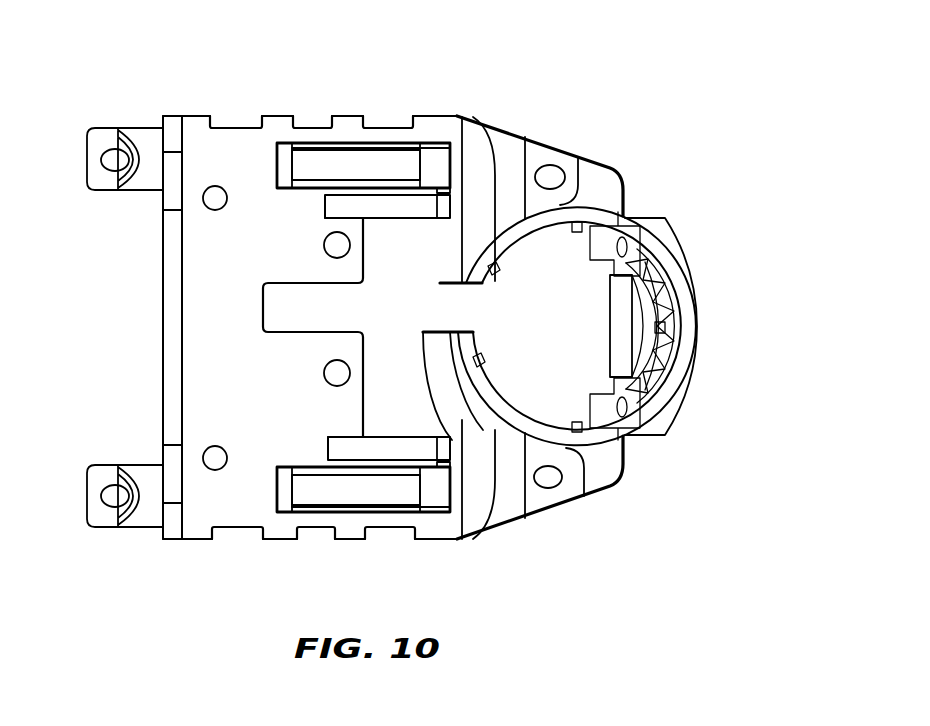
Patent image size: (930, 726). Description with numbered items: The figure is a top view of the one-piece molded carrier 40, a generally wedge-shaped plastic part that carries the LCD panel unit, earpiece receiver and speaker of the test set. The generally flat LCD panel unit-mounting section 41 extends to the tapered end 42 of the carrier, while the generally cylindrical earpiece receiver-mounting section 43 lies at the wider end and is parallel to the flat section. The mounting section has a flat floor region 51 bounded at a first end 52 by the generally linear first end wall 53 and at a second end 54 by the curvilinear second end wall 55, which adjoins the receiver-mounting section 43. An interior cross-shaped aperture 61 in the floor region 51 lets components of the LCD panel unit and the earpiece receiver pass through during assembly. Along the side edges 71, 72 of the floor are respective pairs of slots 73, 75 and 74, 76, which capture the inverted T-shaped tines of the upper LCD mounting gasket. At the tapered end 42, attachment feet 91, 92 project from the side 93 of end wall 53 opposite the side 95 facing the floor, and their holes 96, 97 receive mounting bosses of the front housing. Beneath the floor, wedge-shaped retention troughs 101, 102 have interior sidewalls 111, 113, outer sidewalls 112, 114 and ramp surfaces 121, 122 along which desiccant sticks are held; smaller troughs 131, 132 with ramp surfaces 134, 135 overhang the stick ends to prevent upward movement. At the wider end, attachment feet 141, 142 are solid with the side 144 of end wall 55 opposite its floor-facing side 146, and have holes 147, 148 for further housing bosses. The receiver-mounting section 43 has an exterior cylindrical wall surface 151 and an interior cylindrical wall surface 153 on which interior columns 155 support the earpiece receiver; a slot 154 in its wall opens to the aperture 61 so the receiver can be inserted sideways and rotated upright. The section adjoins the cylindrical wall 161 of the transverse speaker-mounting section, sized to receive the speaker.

The carrier 40 is at (662, 168).
The LCD panel unit-mounting section 41 is at (280, 104).
The tapered end 42 is at (163, 540).
The earpiece receiver-mounting section 43 is at (632, 213).
The floor region 51 is at (190, 362).
The first end 52 is at (182, 279).
The first end wall 53 is at (167, 245).
The second end 54 is at (460, 531).
The second end wall 55 is at (462, 117).
The cross-shaped aperture 61 is at (274, 322).
The side edge 71 is at (280, 540).
The side edge 72 is at (344, 116).
The slot 73 is at (222, 540).
The slot 74 is at (232, 114).
The slot 75 is at (388, 540).
The slot 76 is at (386, 127).
The attachment foot 91 is at (95, 528).
The attachment foot 92 is at (104, 127).
The side 93 is at (164, 305).
The side 95 is at (183, 333).
The hole 96 is at (112, 496).
The hole 97 is at (112, 158).
The retention trough 101 is at (277, 486).
The retention trough 102 is at (277, 163).
The interior sidewall 111 is at (306, 467).
The outer sidewall 112 is at (355, 513).
The interior sidewall 113 is at (320, 183).
The outer sidewall 114 is at (316, 128).
The ramp surface 121 is at (282, 513).
The ramp surface 122 is at (302, 180).
The smaller trough 131 is at (343, 437).
The smaller trough 132 is at (325, 225).
The ramp surface 134 is at (425, 440).
The ramp surface 135 is at (401, 209).
The attachment foot 141 is at (555, 502).
The attachment foot 142 is at (541, 136).
The side 144 is at (499, 140).
The side 146 is at (446, 402).
The hole 147 is at (562, 479).
The hole 148 is at (553, 176).
The exterior cylindrical wall surface 151 is at (672, 404).
The interior cylindrical wall surface 153 is at (514, 250).
The slot 154 is at (463, 313).
The interior columns 155 is at (499, 275).
The cylindrical wall 161 is at (673, 240).